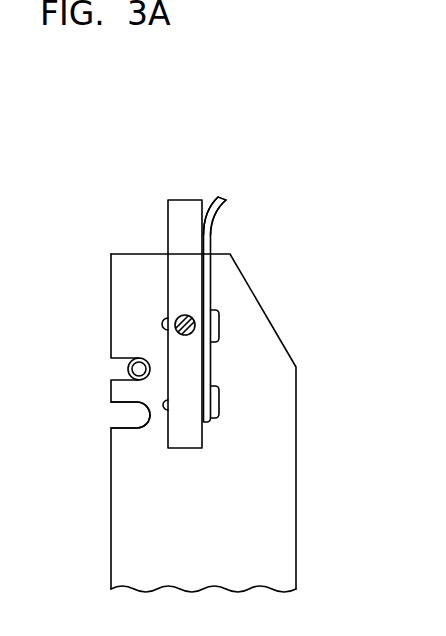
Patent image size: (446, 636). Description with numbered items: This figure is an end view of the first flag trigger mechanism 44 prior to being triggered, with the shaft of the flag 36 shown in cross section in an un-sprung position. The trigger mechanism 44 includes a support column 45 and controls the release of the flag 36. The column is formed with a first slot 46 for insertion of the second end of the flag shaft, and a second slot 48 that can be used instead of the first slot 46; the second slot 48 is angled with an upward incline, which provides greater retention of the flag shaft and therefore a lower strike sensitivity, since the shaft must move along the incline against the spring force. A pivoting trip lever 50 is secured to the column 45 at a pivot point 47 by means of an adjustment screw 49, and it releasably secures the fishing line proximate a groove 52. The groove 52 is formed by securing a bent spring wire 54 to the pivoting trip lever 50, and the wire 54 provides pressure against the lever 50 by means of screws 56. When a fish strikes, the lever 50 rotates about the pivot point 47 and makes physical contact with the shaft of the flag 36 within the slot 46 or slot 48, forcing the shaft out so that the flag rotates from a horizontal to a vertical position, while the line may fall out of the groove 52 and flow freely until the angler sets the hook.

The flag 36 is at (92, 333).
The trigger mechanism 44 is at (212, 423).
The support column 45 is at (257, 535).
The slot 46 is at (120, 370).
The pivot point 47 is at (207, 272).
The second slot 48 is at (132, 420).
The adjustment screw 49 is at (197, 323).
The pivoting trip lever 50 is at (207, 284).
The groove 52 is at (275, 280).
The bent spring wire 54 is at (213, 228).
The screws 56 is at (213, 325).